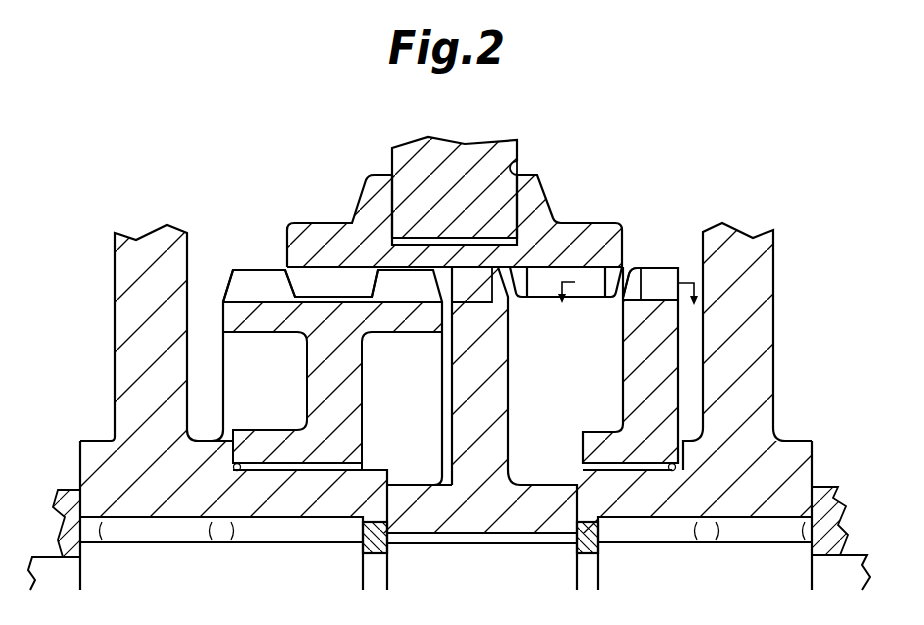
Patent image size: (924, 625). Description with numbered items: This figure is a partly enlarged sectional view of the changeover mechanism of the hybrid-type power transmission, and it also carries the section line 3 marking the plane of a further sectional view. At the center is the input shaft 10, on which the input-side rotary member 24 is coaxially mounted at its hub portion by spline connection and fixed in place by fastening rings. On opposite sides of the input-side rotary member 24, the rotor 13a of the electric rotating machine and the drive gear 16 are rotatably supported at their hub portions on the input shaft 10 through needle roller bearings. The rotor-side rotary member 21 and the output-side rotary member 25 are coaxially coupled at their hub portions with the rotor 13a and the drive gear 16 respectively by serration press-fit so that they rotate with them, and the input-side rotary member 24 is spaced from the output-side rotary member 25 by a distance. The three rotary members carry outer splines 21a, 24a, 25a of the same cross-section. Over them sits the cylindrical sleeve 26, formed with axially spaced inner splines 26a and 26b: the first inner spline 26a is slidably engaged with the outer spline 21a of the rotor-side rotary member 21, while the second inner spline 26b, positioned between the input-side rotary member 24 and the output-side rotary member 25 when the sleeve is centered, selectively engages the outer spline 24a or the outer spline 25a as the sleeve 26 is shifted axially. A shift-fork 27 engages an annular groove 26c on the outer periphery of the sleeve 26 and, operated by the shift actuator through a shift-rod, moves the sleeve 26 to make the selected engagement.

The input shaft 10 is at (845, 565).
The rotor 13a is at (125, 318).
The drive gear 16 is at (763, 310).
The rotor-side rotary member 21 is at (358, 392).
The outer spline of rotor-side rotary member 21a is at (238, 290).
The input-side rotary member 24 is at (500, 406).
The outer spline of input-side rotary member 24a is at (482, 291).
The output-side rotary member 25 is at (633, 356).
The outer spline of output-side rotary member 25a is at (655, 275).
The sleeve 26 is at (357, 232).
The first inner spline 26a is at (288, 283).
The second inner spline 26b is at (578, 272).
The annular groove 26c is at (517, 165).
The shift-fork 27 is at (400, 156).
The section line 3- 3 is at (620, 299).